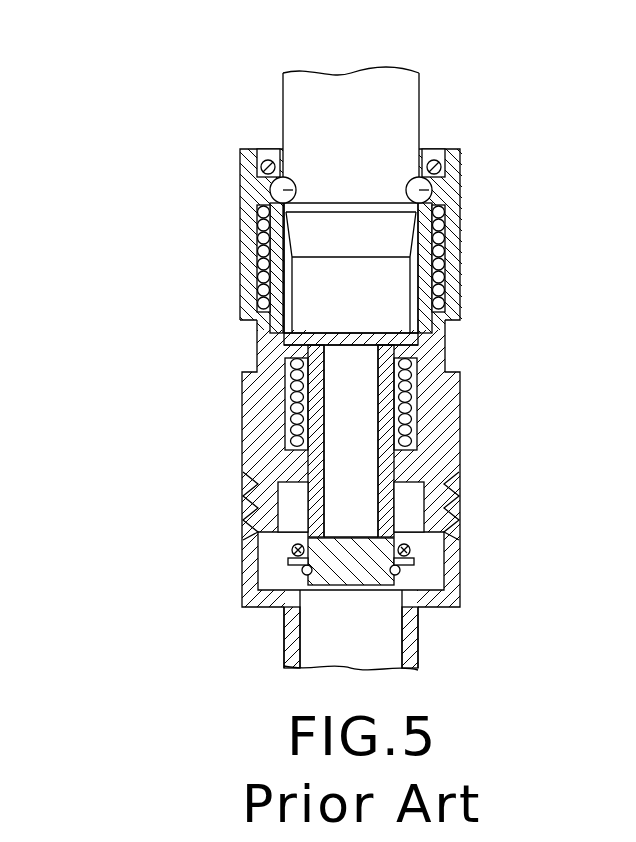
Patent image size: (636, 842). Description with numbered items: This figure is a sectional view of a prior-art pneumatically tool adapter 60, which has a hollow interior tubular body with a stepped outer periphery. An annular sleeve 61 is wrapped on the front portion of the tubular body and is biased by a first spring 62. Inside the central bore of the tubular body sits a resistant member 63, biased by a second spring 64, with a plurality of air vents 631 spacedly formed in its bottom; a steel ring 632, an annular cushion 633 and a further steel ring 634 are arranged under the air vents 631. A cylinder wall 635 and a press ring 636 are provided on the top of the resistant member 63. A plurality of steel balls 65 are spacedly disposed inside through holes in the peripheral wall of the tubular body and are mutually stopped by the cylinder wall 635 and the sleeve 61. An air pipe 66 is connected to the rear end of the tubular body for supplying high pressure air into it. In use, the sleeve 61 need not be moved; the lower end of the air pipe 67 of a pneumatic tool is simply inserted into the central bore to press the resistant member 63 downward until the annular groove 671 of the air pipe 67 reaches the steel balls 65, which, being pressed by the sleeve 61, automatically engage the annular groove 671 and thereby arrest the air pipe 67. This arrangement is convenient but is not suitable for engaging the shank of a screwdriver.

The pneumatically tool adapter 60 is at (450, 447).
The annular sleeve 61 is at (455, 213).
The first spring 62 is at (442, 249).
The resistant member 63 is at (398, 512).
The air vents 631 is at (310, 537).
The steel ring 632 is at (400, 570).
The annular cushion 633 is at (307, 568).
The steel ring 634 is at (412, 547).
The cylinder wall 635 is at (277, 283).
The cup 636 is at (412, 337).
The second spring 64 is at (405, 398).
The steel balls 65 is at (275, 192).
The air pipe 66 is at (415, 637).
The air pipe 67 is at (400, 94).
The annular groove 671 is at (300, 196).